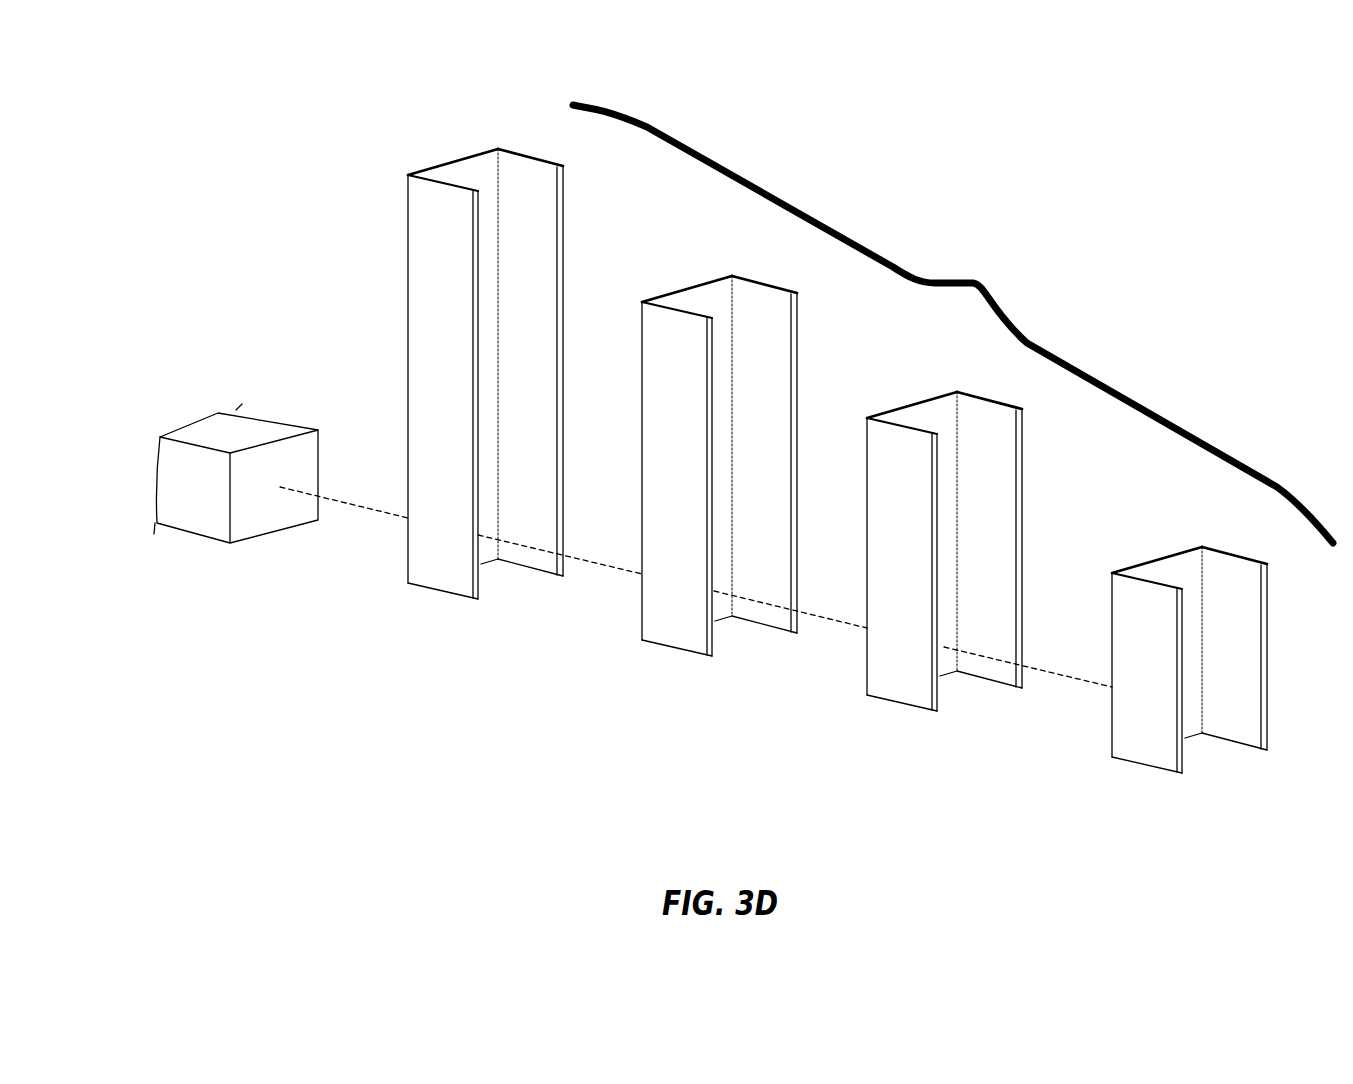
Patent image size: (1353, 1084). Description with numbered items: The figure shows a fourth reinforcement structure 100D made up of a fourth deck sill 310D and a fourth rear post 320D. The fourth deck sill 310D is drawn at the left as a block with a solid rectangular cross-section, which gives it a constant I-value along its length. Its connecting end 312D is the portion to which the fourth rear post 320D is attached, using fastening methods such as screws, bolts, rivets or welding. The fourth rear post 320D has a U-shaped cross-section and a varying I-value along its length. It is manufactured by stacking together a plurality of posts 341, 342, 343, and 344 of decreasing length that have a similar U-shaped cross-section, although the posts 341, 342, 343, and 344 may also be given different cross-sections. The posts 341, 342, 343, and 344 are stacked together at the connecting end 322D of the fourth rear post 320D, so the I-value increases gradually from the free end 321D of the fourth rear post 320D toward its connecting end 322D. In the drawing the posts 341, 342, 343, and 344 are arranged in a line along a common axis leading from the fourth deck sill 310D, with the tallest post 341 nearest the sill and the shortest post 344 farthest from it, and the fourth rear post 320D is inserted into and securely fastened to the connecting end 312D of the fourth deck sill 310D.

The fourth reinforcement structure 100D is at (1240, 158).
The fourth deck sill 310D is at (187, 518).
The connecting end of the fourth deck sill 312D is at (287, 418).
The fourth rear post 320D is at (953, 324).
The free end of the fourth rear post 321D is at (545, 362).
The connecting end of the fourth rear post 322D is at (376, 387).
The post 341 is at (451, 604).
The post 342 is at (673, 636).
The post 343 is at (897, 677).
The post 344 is at (1133, 743).